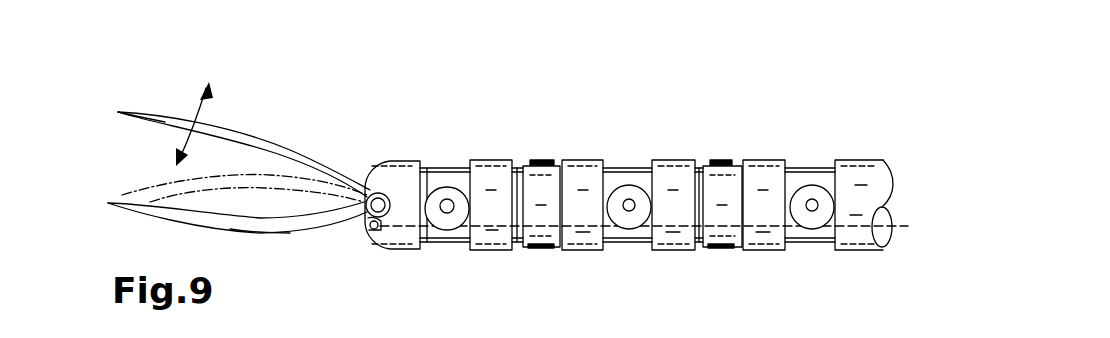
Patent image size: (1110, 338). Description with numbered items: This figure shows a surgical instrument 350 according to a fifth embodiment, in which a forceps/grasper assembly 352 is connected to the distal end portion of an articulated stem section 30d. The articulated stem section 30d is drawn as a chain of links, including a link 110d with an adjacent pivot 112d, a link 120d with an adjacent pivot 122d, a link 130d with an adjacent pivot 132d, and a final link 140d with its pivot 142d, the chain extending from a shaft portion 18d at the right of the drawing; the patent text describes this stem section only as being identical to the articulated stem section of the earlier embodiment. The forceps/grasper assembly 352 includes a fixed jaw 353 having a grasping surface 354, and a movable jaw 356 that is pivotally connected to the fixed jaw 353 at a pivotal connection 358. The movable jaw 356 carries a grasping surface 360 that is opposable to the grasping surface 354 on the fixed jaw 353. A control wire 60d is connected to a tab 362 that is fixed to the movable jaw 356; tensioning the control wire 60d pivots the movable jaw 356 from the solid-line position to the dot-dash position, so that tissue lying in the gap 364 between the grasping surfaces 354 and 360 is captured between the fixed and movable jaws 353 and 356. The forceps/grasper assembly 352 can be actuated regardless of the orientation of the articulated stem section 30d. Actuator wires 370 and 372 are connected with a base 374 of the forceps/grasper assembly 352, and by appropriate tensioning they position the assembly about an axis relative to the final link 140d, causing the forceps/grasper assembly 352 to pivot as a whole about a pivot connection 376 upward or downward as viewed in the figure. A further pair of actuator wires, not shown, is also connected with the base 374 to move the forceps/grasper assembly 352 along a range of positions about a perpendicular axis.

The shaft 18d is at (860, 158).
The articulated stem section 30d is at (708, 84).
The control wire 60d is at (900, 228).
The link member 110d is at (766, 158).
The pivot joint 112d is at (818, 213).
The link member 120d is at (668, 158).
The pivot joint 122d is at (718, 249).
The link member 130d is at (598, 158).
The pivot joint 132d is at (632, 212).
The final link 140d is at (485, 158).
The pivot joint 142d is at (543, 249).
The surgical instrument 350 is at (568, 116).
The forceps/grasper assembly 352 is at (249, 78).
The fixed jaw 353 is at (292, 235).
The grasping surface 354 is at (102, 204).
The movable jaw 356 is at (260, 130).
The pivotal connection 358 is at (372, 194).
The grasping surface 360 is at (137, 125).
The tab 362 is at (372, 234).
The gap 364 is at (130, 158).
The actuator wire 370 is at (428, 168).
The actuator wire 372 is at (437, 243).
The base 374 is at (373, 159).
The pivot connection 376 is at (450, 198).